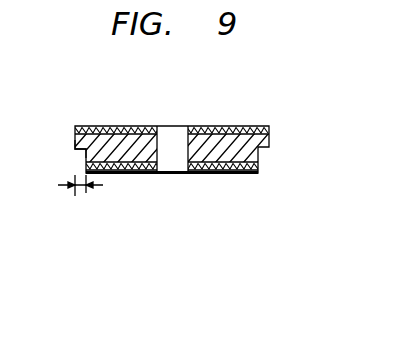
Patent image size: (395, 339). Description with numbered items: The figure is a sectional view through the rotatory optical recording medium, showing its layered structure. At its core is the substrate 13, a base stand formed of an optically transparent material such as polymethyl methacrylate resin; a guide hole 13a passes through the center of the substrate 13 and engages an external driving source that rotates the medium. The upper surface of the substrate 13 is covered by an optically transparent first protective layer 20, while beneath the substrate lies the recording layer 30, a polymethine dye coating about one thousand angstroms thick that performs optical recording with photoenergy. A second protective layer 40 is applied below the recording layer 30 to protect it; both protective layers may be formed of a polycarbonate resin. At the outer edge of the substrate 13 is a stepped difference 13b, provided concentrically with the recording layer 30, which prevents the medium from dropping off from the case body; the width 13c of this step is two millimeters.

The substrate 13 is at (269, 138).
The guide hole 13a is at (172, 134).
The stepped difference 13b is at (78, 150).
The width of the stepped difference 13c is at (79, 190).
The first protective layer 20 is at (235, 131).
The recording layer 30 is at (258, 164).
The second protective layer 40 is at (255, 173).